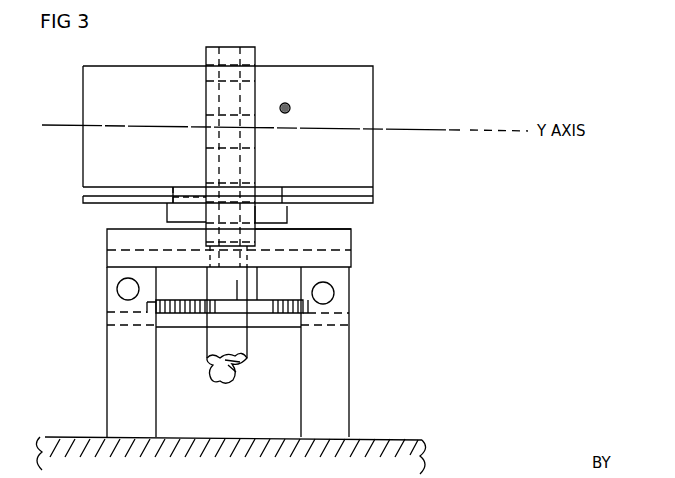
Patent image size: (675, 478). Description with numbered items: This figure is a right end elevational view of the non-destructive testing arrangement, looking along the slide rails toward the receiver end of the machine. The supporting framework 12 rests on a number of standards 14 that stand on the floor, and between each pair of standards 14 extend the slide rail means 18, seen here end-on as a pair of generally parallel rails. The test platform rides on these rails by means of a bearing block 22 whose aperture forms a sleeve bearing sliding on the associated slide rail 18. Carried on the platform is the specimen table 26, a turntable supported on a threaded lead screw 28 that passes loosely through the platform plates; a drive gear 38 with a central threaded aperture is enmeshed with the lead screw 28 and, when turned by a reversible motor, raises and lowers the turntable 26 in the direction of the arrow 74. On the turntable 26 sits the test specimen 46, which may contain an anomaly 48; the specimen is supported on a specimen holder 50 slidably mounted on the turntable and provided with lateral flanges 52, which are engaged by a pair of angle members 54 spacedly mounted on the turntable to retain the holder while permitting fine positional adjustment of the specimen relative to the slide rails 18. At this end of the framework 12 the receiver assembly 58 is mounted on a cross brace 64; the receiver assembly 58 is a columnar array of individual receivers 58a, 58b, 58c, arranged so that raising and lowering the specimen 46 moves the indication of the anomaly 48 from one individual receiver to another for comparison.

The supporting framework 12 is at (352, 240).
The standards 14 is at (350, 350).
The slide rail means 18 is at (117, 286).
The bearing block 22 is at (105, 298).
The specimen table 26 is at (172, 213).
The threaded lead screw 28 is at (237, 347).
The drive gear 38 is at (170, 302).
The test specimen 46 is at (334, 66).
The anomaly 48 is at (291, 107).
The specimen holder 50 is at (137, 187).
The lateral flanges 52 is at (85, 194).
The angle members 54 is at (186, 187).
The receiver assembly 58 is at (245, 48).
The individual receiver 58a is at (252, 101).
The individual receiver 58b is at (255, 131).
The individual receiver 58c is at (255, 165).
The cross brace 64 is at (298, 228).
The arrow 74 is at (238, 374).